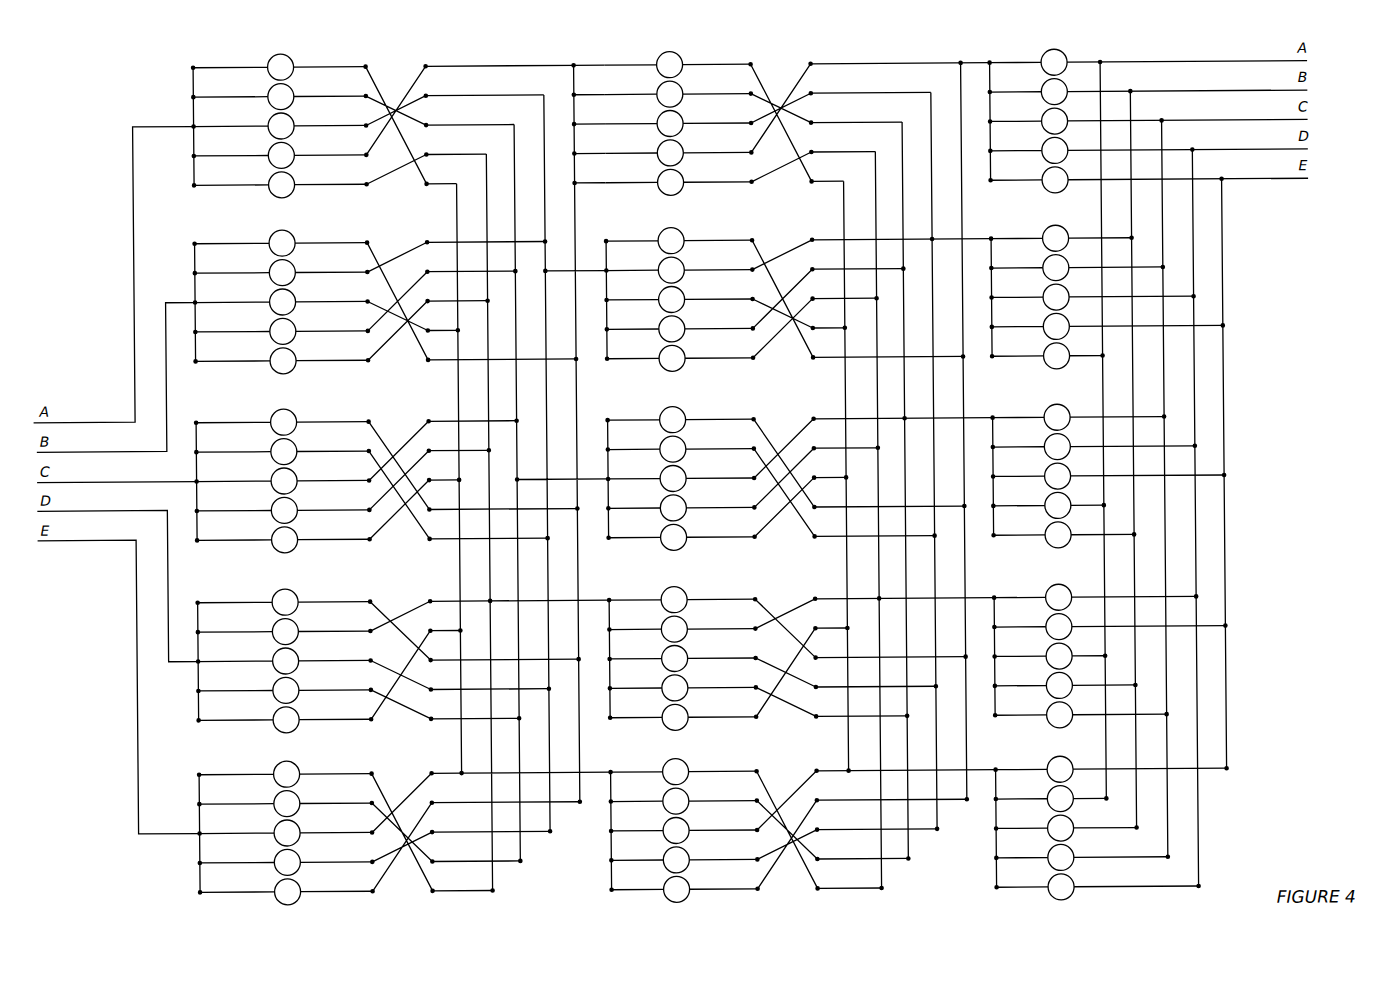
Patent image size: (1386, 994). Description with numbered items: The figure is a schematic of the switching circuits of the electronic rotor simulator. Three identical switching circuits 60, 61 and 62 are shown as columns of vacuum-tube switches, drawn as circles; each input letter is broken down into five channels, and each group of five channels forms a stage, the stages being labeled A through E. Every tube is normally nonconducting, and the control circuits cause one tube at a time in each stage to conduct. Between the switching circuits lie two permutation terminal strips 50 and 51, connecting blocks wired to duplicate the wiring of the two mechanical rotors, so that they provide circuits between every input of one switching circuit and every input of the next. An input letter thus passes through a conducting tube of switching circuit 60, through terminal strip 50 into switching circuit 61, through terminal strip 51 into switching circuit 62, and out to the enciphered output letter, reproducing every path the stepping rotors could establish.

The switching circuit 60 is at (262, 69).
The permutation terminal strip 50 is at (388, 68).
The switching circuit 61 is at (652, 70).
The permutation terminal strip 51 is at (774, 70).
The switching circuit 62 is at (1033, 72).